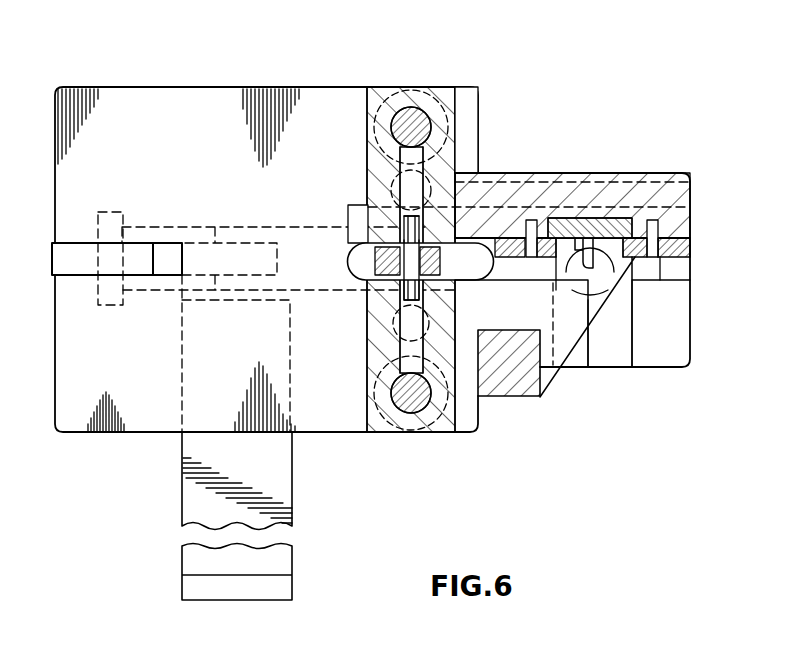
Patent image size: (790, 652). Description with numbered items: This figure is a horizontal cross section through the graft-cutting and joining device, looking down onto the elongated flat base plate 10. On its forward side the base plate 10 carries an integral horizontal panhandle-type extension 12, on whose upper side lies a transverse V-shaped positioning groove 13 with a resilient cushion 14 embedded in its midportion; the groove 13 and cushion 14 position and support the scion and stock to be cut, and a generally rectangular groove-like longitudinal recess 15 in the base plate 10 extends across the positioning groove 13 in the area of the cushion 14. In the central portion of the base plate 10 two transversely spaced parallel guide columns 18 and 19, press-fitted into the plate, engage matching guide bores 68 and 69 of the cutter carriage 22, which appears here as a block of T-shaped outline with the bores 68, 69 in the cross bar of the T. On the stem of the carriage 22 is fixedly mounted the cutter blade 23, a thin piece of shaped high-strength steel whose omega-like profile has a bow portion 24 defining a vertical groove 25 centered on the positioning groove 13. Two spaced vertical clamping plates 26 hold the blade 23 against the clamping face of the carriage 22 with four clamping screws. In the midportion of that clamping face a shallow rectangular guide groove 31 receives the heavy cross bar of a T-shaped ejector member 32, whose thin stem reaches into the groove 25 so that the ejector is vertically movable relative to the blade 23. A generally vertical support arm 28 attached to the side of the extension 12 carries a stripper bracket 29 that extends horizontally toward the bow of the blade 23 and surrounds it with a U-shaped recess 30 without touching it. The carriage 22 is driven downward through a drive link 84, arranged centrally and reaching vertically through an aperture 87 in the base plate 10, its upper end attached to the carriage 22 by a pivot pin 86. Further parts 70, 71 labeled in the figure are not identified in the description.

The base plate 10 is at (143, 102).
The extension 12 is at (690, 325).
The positioning groove 13 is at (586, 290).
The resilient cushion 14 is at (633, 280).
The longitudinal recess 15 is at (678, 275).
The guide column 18 is at (413, 415).
The guide column 19 is at (405, 107).
The cutter carriage 22 is at (531, 222).
The cutter blade 23 is at (662, 238).
The bow portion 24 is at (598, 262).
The vertical groove 25 is at (578, 245).
The clamping plates 26 is at (512, 238).
The support arm 28 is at (520, 380).
The stripper bracket 29 is at (583, 300).
The U-shaped recess 30 is at (590, 290).
The guide groove 31 is at (641, 222).
The ejector member 32 is at (563, 218).
The guide bore 68 is at (405, 415).
The guide bore 69 is at (455, 107).
The cover plate 70 is at (592, 218).
The stop 71 is at (540, 268).
The drive link 84 is at (357, 274).
The pivot pin 86 is at (405, 240).
The aperture 87 is at (352, 263).